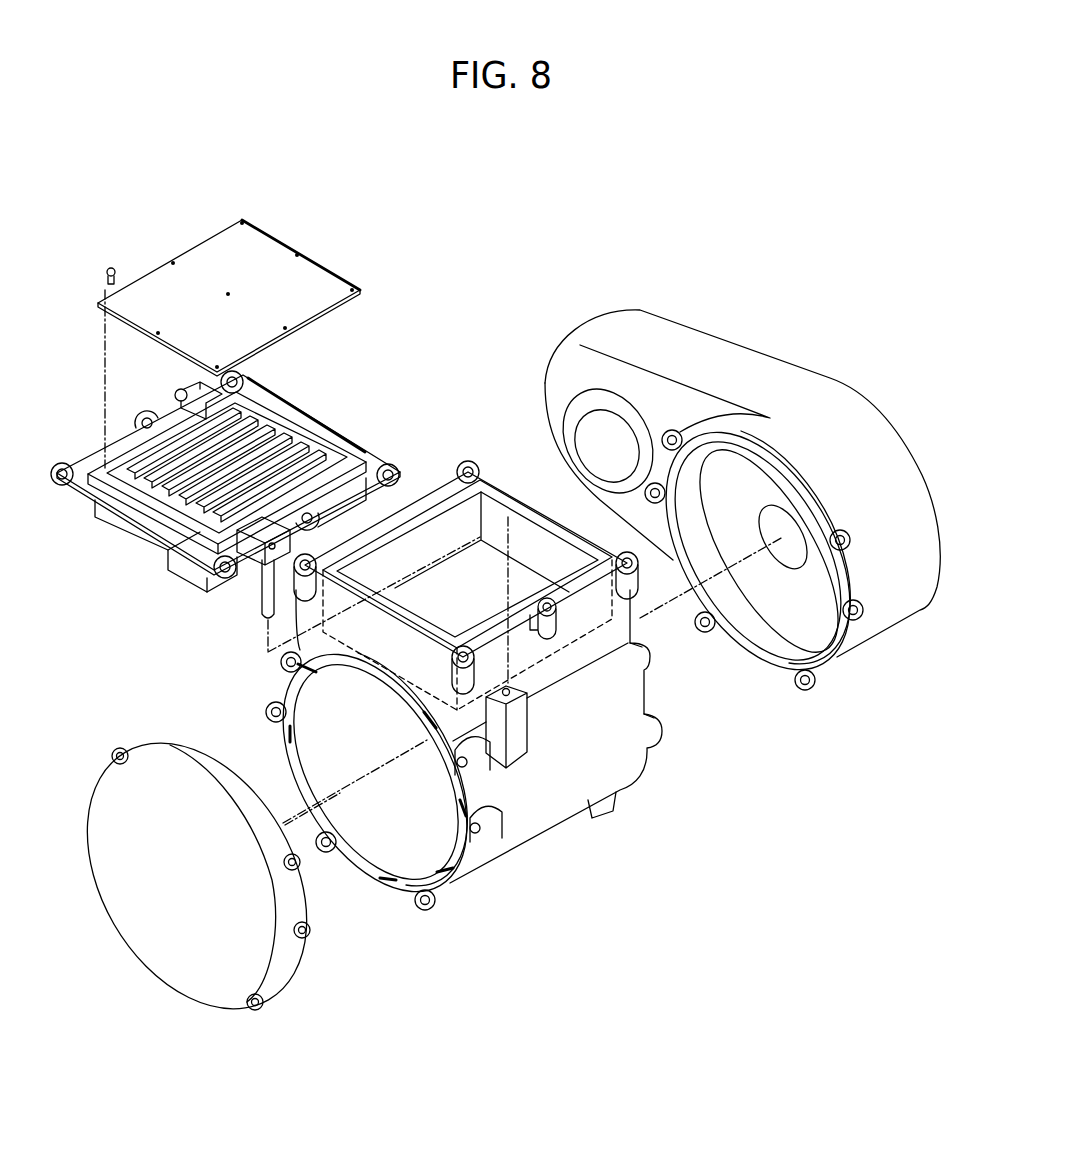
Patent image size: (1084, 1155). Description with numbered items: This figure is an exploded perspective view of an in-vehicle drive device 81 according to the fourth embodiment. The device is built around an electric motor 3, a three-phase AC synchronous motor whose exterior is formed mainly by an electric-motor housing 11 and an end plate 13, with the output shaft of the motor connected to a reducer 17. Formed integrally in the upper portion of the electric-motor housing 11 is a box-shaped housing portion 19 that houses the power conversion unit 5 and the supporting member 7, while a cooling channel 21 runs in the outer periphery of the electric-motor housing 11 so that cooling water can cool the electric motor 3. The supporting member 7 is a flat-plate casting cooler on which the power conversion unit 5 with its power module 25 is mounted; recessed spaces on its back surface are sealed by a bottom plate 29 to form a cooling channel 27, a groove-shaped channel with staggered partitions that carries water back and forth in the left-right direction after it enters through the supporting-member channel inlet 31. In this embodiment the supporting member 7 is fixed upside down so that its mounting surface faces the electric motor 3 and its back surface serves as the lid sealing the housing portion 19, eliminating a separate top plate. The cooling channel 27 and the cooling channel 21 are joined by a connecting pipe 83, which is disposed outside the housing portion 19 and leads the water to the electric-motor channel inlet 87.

The electric motor 3 is at (560, 875).
The power conversion unit 5 is at (153, 582).
The supporting member 7 is at (329, 436).
The electric-motor housing 11 is at (638, 693).
The end plate 13 is at (132, 930).
The reducer 17 is at (872, 418).
The housing portion 19 is at (622, 632).
The cooling channel 21 is at (389, 884).
The power module 25 is at (116, 522).
The cooling channel 27 is at (267, 406).
The bottom plate 29 is at (279, 252).
The supporting-member channel inlet 31 is at (176, 392).
The in-vehicle drive device 81 is at (465, 278).
The connecting pipe 83 is at (262, 603).
The electric-motor channel inlet 87 is at (512, 690).